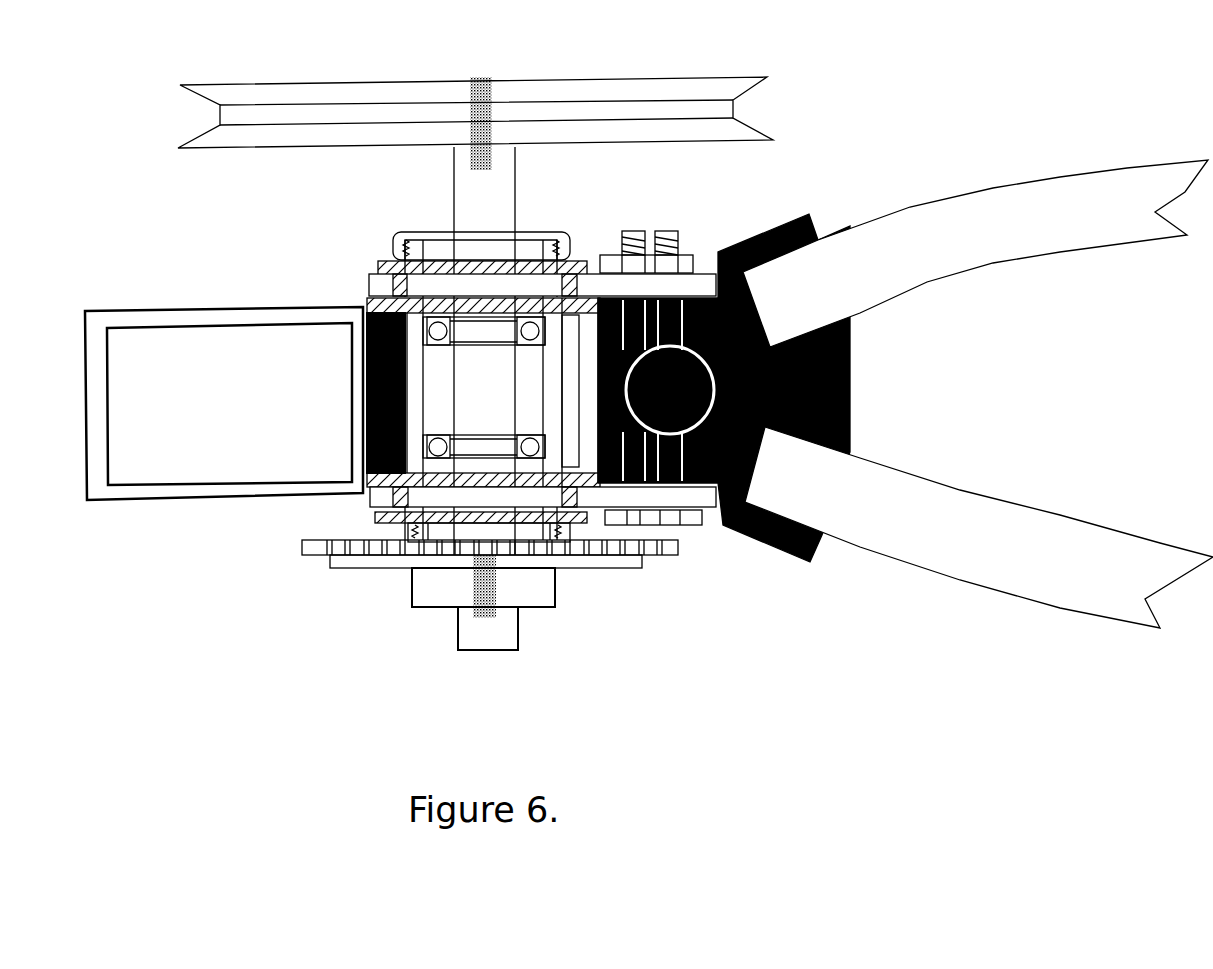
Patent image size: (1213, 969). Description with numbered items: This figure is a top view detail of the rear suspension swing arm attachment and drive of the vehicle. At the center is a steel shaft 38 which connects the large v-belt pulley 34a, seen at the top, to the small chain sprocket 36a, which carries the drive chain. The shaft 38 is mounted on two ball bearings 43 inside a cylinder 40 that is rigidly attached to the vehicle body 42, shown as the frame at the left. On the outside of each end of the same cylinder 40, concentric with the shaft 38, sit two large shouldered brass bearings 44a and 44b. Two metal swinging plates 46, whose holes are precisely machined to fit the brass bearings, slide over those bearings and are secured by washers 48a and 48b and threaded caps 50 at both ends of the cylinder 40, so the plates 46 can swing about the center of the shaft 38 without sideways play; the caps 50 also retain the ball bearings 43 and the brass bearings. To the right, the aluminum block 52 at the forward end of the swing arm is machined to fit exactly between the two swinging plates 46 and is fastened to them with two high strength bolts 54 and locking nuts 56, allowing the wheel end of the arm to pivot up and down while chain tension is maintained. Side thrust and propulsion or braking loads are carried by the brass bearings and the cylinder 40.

The large v-belt pulley 34a is at (340, 92).
The small chain sprocket 36a is at (655, 542).
The steel shaft 38 is at (498, 628).
The cylinder 40 is at (415, 347).
The vehicle body 42 is at (185, 322).
The ball bearings 43 is at (442, 458).
The large brass bearing 44a is at (533, 262).
The large brass bearing 44b is at (541, 478).
The swinging plates 46 is at (502, 290).
The washer 48a is at (492, 268).
The washer 48b is at (547, 522).
The threaded caps 50 is at (427, 233).
The aluminum block 52 is at (793, 387).
The high strength bolts 54 is at (668, 233).
The locking nuts 56 is at (670, 263).